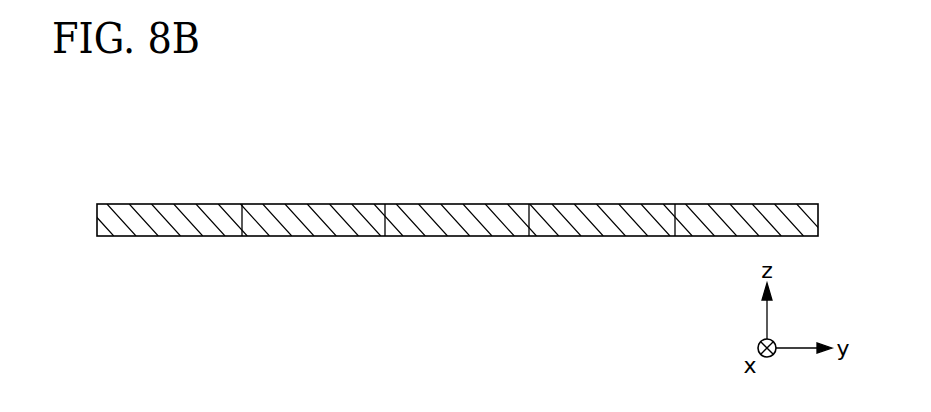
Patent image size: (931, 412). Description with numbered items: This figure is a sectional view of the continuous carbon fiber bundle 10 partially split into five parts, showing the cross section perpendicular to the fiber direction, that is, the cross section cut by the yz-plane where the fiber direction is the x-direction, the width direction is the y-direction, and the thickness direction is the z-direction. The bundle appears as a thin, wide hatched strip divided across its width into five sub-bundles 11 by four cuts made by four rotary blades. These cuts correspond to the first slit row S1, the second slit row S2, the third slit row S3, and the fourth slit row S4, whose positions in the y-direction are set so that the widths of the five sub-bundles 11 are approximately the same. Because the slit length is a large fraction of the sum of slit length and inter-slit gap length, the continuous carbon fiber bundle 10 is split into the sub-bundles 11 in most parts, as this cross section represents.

The continuous carbon fiber bundle 10 is at (715, 132).
The sub-bundle 11 is at (172, 220).
The first slit row S1 is at (242, 204).
The second slit row S2 is at (385, 204).
The third slit row S3 is at (529, 204).
The fourth slit row S4 is at (675, 204).